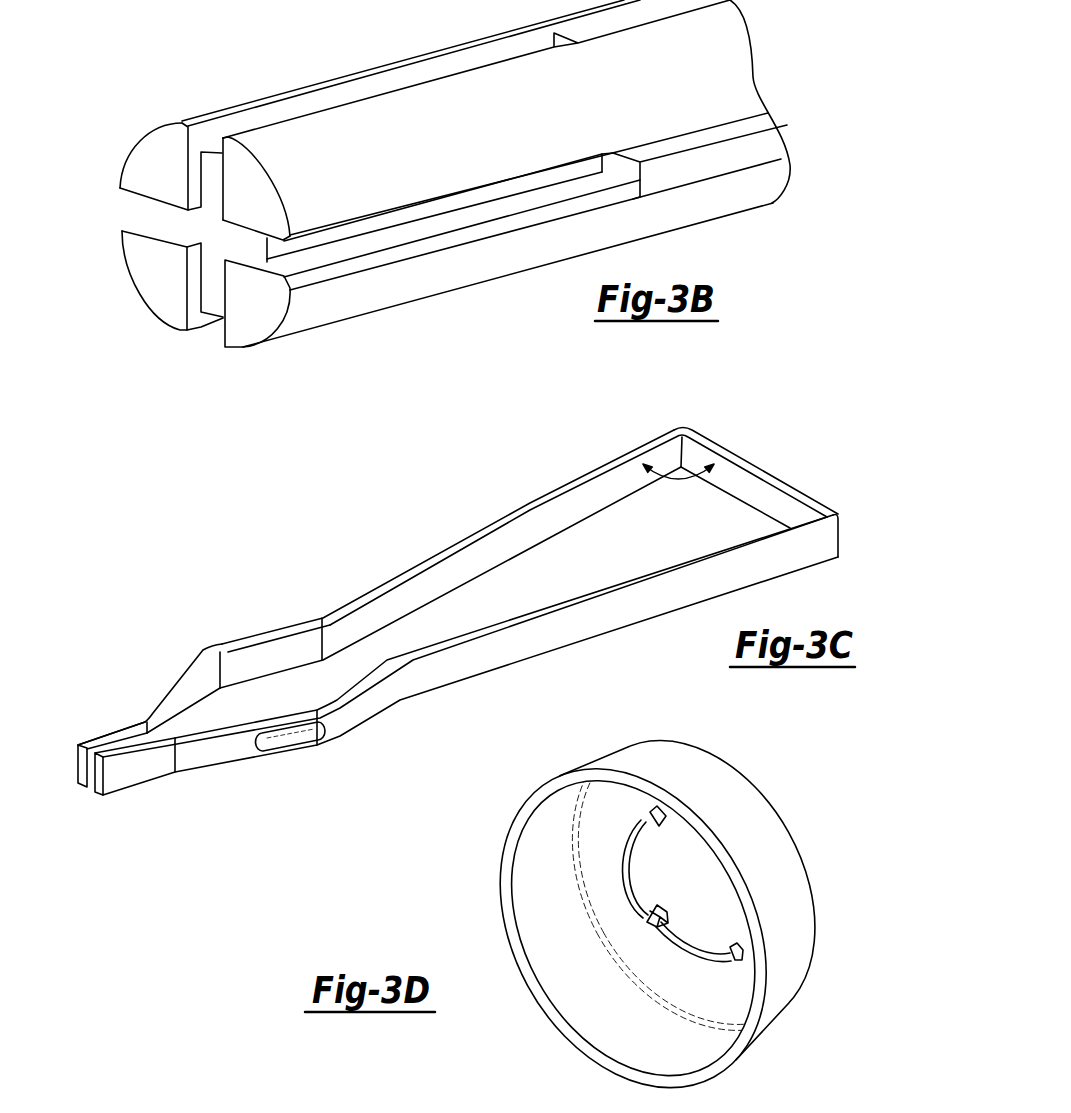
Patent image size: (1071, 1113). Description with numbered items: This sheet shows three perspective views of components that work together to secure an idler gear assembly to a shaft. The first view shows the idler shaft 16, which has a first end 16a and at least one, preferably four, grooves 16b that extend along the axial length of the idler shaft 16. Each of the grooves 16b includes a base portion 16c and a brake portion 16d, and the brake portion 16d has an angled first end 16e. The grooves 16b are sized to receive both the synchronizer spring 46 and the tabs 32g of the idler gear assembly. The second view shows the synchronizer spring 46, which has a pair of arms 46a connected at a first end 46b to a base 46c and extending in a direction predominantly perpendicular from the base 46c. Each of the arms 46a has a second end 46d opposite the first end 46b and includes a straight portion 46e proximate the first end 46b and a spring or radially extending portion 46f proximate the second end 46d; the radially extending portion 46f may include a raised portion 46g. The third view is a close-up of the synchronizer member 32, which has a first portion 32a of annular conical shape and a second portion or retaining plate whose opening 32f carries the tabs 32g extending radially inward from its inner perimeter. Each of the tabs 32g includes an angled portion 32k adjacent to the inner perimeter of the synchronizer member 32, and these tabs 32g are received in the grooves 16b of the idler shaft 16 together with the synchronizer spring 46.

In FIG. 3B, the idler shaft 16 is at (707, 200).
In FIG. 3B, the first end 16a is at (240, 328).
In FIG. 3B, the grooves 16b is at (142, 227).
In FIG. 3B, the base portion 16c is at (518, 187).
In FIG. 3B, the brake portion 16d is at (413, 247).
In FIG. 3B, the angled first end 16e is at (617, 170).
In FIG. 3C, the synchronizer spring 46 is at (772, 442).
In FIG. 3C, the arms 46a is at (560, 487).
In FIG. 3C, the first end 46b is at (683, 425).
In FIG. 3C, the base 46c is at (738, 493).
In FIG. 3C, the second end 46d is at (80, 768).
In FIG. 3C, the straight portion 46e is at (488, 560).
In FIG. 3C, the radially extending portion 46f is at (303, 708).
In FIG. 3C, the raised portion 46g is at (343, 707).
In FIG. 3D, the synchronizer member 32 is at (730, 770).
In FIG. 3D, the first portion 32a is at (688, 787).
In FIG. 3D, the opening 32f is at (683, 950).
In FIG. 3D, the tabs 32g is at (633, 880).
In FIG. 3D, the angled portion 32k is at (657, 923).